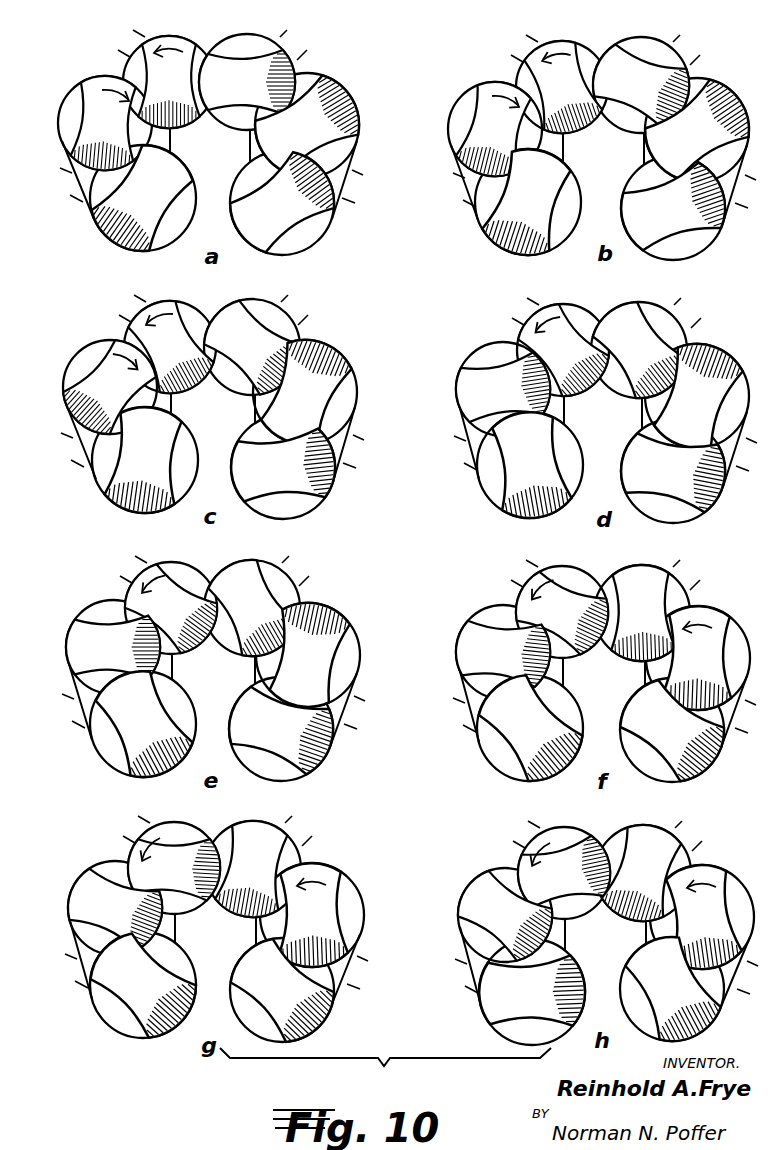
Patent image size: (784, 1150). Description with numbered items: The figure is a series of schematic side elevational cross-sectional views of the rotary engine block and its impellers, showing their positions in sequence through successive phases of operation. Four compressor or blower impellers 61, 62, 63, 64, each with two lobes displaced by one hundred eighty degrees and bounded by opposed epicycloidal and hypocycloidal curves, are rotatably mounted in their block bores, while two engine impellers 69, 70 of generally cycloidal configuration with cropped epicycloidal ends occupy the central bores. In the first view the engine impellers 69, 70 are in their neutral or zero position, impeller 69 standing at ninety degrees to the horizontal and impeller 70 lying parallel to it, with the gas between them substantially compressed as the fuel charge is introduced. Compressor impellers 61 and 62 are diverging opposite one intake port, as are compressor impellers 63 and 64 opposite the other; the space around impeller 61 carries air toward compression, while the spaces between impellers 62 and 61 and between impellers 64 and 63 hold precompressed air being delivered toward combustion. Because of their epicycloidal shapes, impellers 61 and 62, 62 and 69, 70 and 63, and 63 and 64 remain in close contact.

The compressor impeller 61 is at (334, 597).
The compressor impeller 62 is at (295, 520).
The compressor impeller 63 is at (509, 521).
The compressor impeller 64 is at (488, 597).
The engine impeller 69 is at (351, 463).
The engine impeller 70 is at (463, 477).